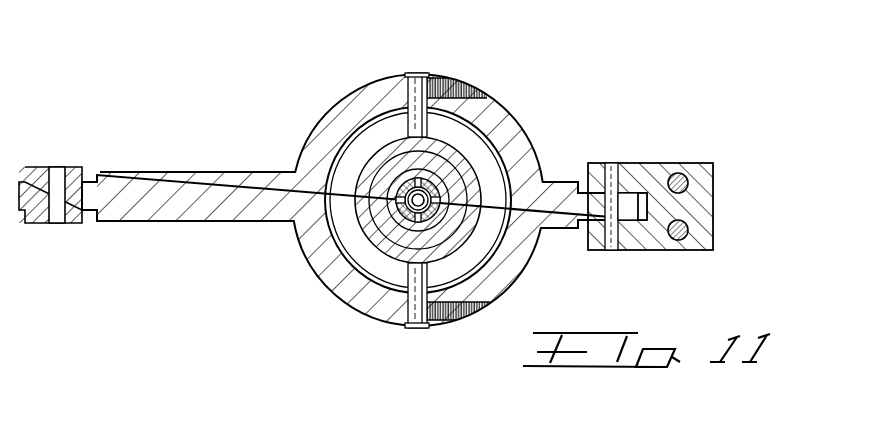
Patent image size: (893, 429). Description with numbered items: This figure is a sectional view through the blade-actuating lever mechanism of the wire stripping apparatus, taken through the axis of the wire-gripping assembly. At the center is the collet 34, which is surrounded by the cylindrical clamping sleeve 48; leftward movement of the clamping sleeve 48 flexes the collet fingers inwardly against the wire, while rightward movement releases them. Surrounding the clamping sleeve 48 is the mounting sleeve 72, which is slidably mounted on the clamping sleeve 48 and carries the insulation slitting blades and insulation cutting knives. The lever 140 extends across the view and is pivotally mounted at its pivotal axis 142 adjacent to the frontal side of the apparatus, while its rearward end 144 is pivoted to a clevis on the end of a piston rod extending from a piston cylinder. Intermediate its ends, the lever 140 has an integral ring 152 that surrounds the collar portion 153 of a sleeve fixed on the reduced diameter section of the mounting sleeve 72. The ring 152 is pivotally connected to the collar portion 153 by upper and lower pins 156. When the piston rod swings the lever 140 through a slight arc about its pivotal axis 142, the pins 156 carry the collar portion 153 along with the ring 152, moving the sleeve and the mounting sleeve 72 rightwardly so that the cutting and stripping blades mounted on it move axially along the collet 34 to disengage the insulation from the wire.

The collet 34 is at (403, 217).
The clamping sleeve 48 is at (433, 224).
The mounting sleeve 72 is at (378, 237).
The lever 140 is at (183, 178).
The pivotal axis of lever 142 is at (613, 166).
The rearward end of lever 144 is at (55, 170).
The ring 152 is at (503, 118).
The collar portion 153 is at (345, 167).
The upper and lower pins 156 is at (418, 73).